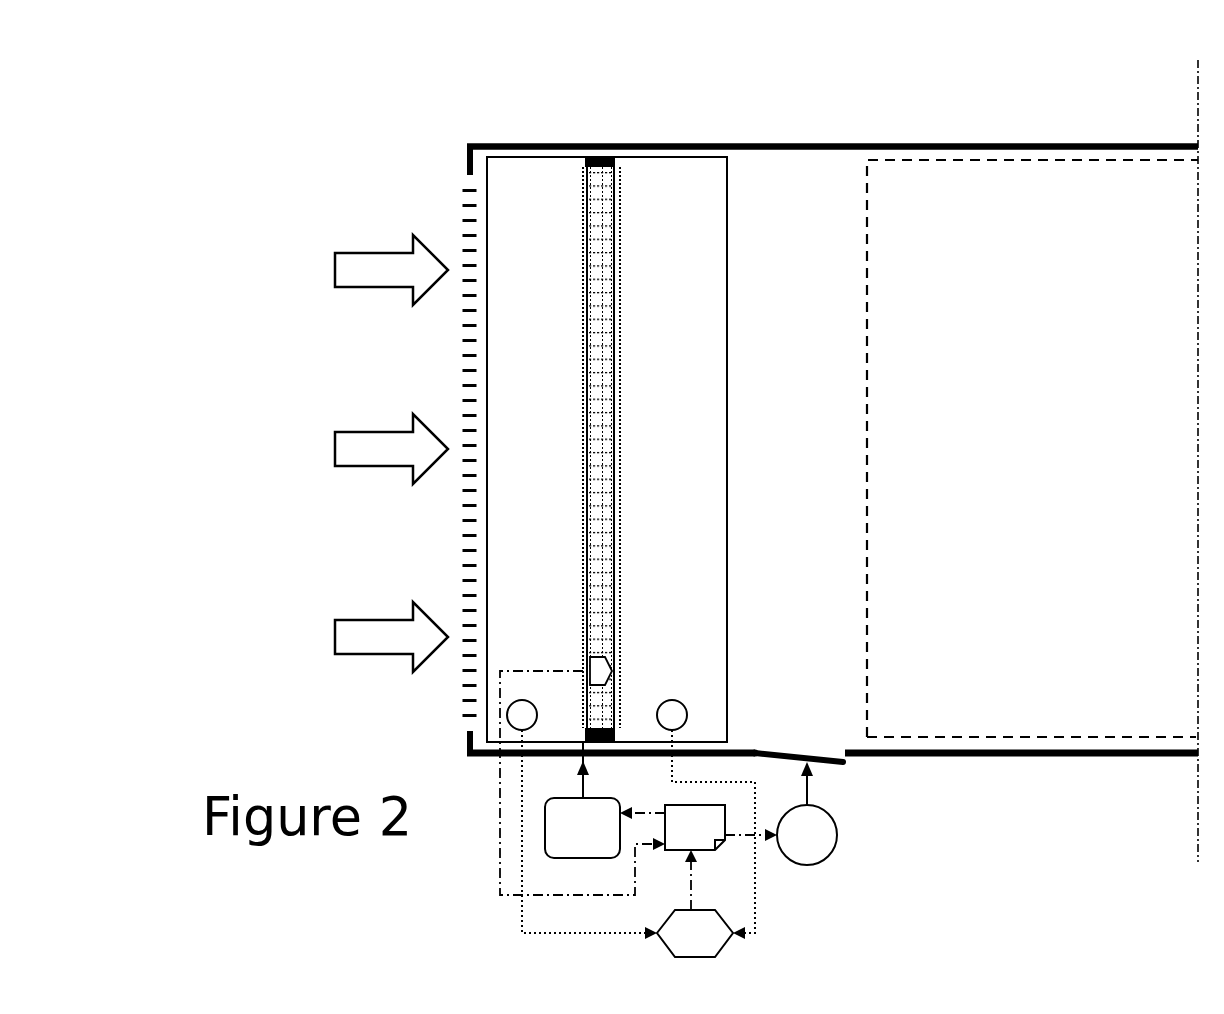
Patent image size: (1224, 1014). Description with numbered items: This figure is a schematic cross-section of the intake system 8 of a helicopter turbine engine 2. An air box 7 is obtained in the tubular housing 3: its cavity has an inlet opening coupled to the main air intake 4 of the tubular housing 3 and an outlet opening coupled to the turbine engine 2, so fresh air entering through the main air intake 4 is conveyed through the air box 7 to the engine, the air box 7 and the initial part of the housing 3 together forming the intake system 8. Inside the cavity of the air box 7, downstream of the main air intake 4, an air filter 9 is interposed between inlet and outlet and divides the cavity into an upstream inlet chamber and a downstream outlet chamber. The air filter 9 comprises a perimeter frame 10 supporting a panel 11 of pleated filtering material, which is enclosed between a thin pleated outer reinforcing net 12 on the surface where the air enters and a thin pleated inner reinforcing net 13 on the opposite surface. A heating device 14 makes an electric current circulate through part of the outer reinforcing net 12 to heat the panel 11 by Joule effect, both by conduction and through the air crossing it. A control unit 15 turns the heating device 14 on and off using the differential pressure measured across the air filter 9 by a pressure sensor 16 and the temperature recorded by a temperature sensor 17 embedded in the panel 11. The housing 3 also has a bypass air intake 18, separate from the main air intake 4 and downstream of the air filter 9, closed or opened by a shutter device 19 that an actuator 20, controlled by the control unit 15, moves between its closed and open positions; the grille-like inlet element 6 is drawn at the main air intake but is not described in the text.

The turbine engine 2 is at (807, 115).
The tubular housing 3 is at (941, 143).
The main air intake 4 is at (422, 501).
The inlet grille 6 is at (476, 340).
The air box 7 is at (690, 157).
The intake system 8 is at (423, 109).
The air filter 9 is at (566, 317).
The perimeter frame 10 is at (616, 162).
The panel of pleated filtering material 11 is at (604, 584).
The outer reinforcing net 12 is at (583, 393).
The inner reinforcing net 13 is at (620, 520).
The heating device 14 is at (597, 779).
The control unit 15 is at (638, 783).
The pressure sensor 16 is at (638, 843).
The temperature sensor 17 is at (597, 672).
The bypass air intake 18 is at (811, 733).
The shutter device 19 is at (845, 763).
The actuator 20 is at (807, 813).